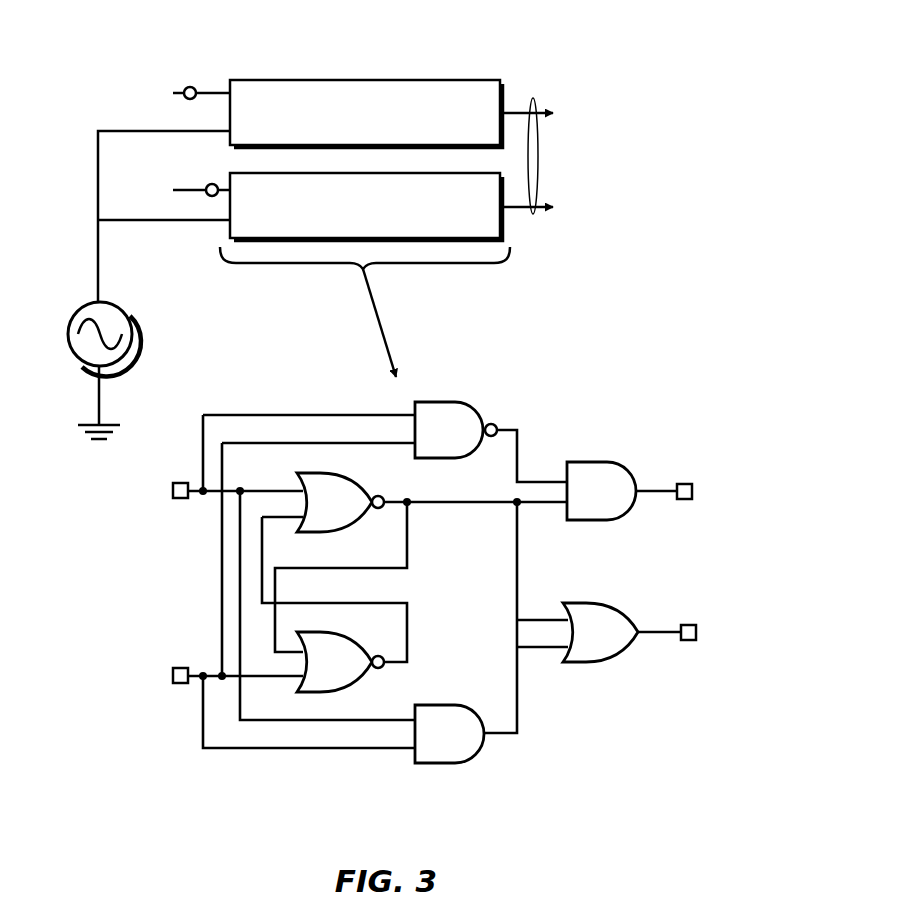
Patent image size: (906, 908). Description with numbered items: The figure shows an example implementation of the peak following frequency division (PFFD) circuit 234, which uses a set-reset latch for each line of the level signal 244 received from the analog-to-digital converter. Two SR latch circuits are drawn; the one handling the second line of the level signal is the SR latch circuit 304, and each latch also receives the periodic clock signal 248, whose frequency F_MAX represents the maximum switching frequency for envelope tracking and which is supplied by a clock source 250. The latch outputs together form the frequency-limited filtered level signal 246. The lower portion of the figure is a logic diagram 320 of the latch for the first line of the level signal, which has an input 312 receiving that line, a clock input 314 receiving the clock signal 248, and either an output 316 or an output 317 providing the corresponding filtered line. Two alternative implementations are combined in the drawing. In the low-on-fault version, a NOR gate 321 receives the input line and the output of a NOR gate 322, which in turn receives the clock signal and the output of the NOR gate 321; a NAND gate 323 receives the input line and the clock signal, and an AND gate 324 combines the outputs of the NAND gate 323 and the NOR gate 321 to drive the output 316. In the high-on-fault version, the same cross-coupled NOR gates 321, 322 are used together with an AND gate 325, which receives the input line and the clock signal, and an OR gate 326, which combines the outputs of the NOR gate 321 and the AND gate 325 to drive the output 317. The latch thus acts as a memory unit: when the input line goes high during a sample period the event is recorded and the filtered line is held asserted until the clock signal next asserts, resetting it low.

The PFFD circuit 234 is at (366, 134).
The level signal 244 is at (212, 183).
The filtered level signal 246 is at (533, 214).
The periodic signal 248 is at (99, 266).
The clock source 250 is at (134, 334).
The SR latch circuit 304 is at (432, 66).
The input 312 is at (178, 499).
The clock input 314 is at (181, 667).
The output 316 is at (684, 500).
The output 317 is at (689, 625).
The logic diagram 320 is at (525, 405).
The NOR gate 321 is at (340, 502).
The NOR gate 322 is at (340, 662).
The NAND gate 323 is at (456, 430).
The AND gate 324 is at (601, 491).
The AND gate 325 is at (449, 734).
The OR gate 326 is at (600, 632).